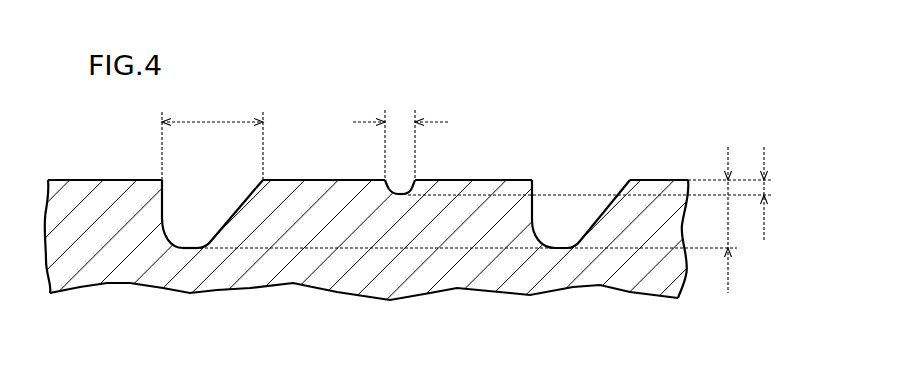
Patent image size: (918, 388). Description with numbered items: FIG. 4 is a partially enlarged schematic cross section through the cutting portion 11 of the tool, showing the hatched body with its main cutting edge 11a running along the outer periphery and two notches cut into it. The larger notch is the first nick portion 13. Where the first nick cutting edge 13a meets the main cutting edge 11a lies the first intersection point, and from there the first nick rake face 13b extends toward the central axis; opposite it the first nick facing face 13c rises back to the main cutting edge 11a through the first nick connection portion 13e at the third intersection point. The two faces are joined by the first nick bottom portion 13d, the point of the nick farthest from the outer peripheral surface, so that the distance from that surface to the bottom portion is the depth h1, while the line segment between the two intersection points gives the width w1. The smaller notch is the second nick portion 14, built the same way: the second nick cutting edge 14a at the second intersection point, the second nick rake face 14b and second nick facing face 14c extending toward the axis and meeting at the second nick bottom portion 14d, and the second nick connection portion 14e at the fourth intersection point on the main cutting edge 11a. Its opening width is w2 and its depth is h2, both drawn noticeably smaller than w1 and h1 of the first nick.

The substrate / base member 11 is at (63, 195).
The main cutting edge 11a is at (663, 180).
The first nick portion 13 is at (356, 218).
The first nick cutting edge 13a is at (162, 180).
The first nick rake face 13b is at (162, 218).
The first nick facing face 13c is at (235, 212).
The first nick bottom portion 13d is at (197, 249).
The first nick connection portion 13e is at (263, 180).
The second nick portion 14 is at (415, 214).
The second nick cutting edge 14a is at (385, 181).
The second nick rake face 14b is at (392, 194).
The second nick facing face 14c is at (413, 186).
The second nick bottom portion 14d is at (405, 194).
The second nick connection portion 14e is at (415, 180).
The width of first nick portion w1 is at (212, 139).
The width of second nick portion w2 is at (401, 140).
The depth of first nick portion h1 is at (483, 220).
The depth of second nick portion h2 is at (600, 193).